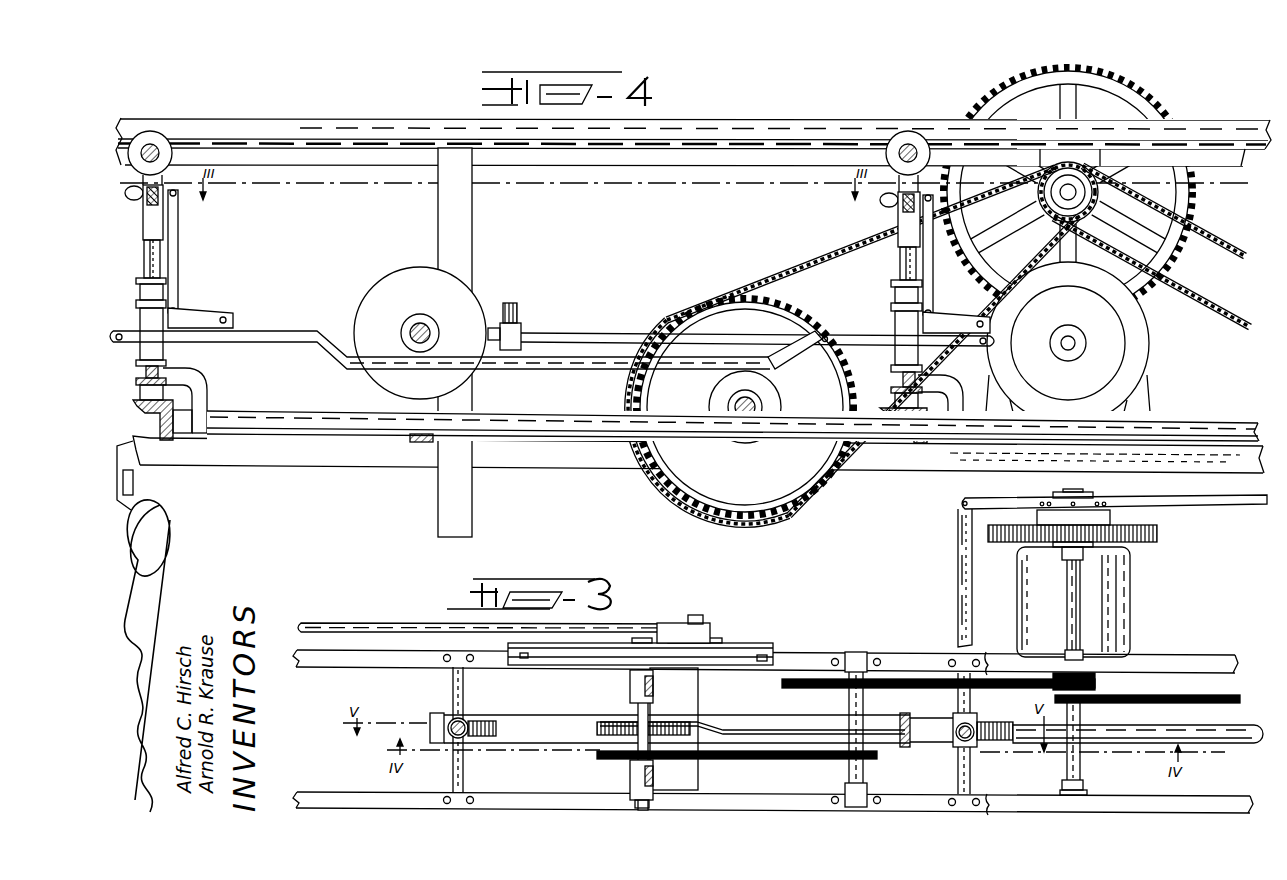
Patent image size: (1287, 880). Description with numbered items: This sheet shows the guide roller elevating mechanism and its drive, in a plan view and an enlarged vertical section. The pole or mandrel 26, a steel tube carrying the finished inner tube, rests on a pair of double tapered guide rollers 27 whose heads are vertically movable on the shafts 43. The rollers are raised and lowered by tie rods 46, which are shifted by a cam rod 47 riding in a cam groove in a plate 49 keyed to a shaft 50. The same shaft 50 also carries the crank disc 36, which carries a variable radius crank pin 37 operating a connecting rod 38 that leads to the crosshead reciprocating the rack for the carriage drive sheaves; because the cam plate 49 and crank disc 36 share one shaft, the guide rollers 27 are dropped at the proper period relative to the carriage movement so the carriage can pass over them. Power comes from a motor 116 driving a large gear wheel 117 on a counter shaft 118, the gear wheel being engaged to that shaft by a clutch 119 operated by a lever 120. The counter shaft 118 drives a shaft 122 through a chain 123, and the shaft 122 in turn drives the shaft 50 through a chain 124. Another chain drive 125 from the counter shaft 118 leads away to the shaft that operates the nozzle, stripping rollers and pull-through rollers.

In FIG. 4, the pole or mandrel 26 is at (1229, 134).
In FIG. 3, the pole or mandrel 26 is at (1223, 730).
In FIG. 4, the double tapered guide rollers 27 is at (176, 157).
In FIG. 3, the crank disc 36 is at (748, 645).
In FIG. 3, the variable radius crank pin 37 is at (713, 624).
In FIG. 3, the connecting rod 38 is at (620, 624).
In FIG. 3, the shafts 43 is at (955, 746).
In FIG. 4, the tie rods 46 is at (561, 369).
In FIG. 3, the tie rods 46 is at (743, 715).
In FIG. 4, the cam rod 47 is at (566, 334).
In FIG. 3, the cam rod 47 is at (770, 723).
In FIG. 4, the plate 49 is at (462, 288).
In FIG. 3, the plate 49 is at (597, 727).
In FIG. 4, the shaft 50 is at (431, 326).
In FIG. 3, the shaft 50 is at (632, 691).
In FIG. 4, the motor 116 is at (1069, 343).
In FIG. 3, the motor 116 is at (1130, 604).
In FIG. 4, the large gear wheel 117 is at (1193, 217).
In FIG. 3, the large gear wheel 117 is at (1157, 534).
In FIG. 4, the counter shaft 118 is at (1055, 197).
In FIG. 3, the clutch 119 is at (1098, 518).
In FIG. 3, the lever 120 is at (996, 507).
In FIG. 4, the shaft 122 is at (758, 400).
In FIG. 3, the shaft 122 is at (843, 708).
In FIG. 4, the chain 123 is at (843, 255).
In FIG. 3, the chain 123 is at (935, 688).
In FIG. 3, the chain 124 is at (786, 758).
In FIG. 4, the chain drive 125 is at (1213, 310).